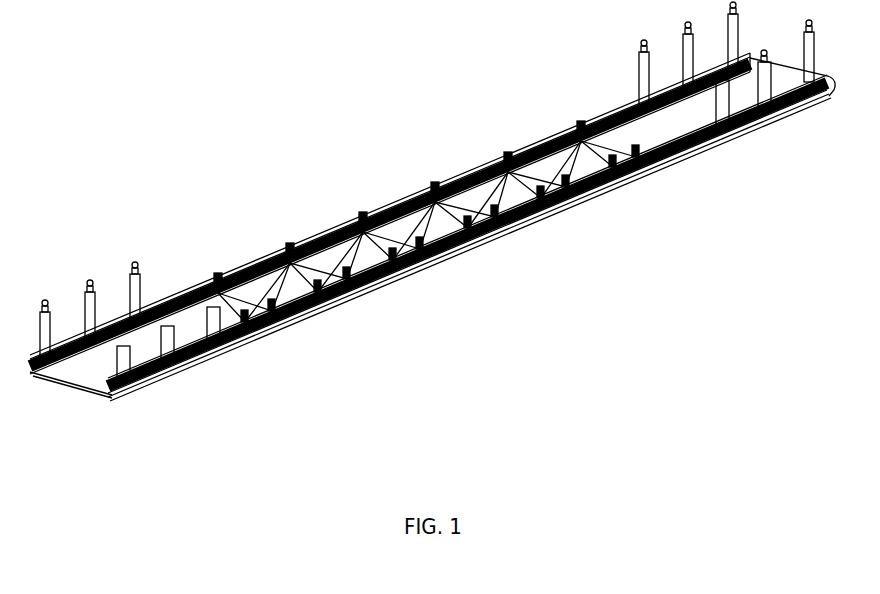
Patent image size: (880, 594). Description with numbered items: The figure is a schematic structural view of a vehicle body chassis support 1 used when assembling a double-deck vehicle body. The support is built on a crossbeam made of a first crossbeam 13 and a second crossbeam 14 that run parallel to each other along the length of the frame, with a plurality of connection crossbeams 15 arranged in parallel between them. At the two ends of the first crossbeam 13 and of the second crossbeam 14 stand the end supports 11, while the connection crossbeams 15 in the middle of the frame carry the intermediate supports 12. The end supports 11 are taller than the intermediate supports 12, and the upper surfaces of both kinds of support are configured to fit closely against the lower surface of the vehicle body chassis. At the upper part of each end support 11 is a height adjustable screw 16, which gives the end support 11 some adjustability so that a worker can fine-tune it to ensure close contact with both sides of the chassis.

The vehicle body chassis support 1 is at (437, 237).
The end support 11 is at (742, 104).
The intermediate support 12 is at (597, 183).
The first crossbeam 13 is at (470, 235).
The second crossbeam 14 is at (405, 205).
The connection crossbeam 15 is at (423, 253).
The height adjustable screw 16 is at (135, 275).